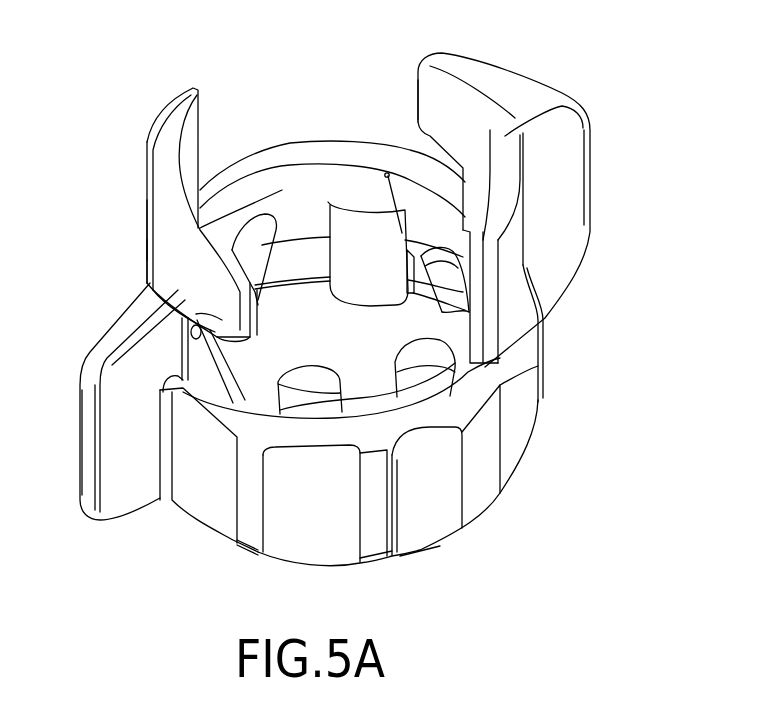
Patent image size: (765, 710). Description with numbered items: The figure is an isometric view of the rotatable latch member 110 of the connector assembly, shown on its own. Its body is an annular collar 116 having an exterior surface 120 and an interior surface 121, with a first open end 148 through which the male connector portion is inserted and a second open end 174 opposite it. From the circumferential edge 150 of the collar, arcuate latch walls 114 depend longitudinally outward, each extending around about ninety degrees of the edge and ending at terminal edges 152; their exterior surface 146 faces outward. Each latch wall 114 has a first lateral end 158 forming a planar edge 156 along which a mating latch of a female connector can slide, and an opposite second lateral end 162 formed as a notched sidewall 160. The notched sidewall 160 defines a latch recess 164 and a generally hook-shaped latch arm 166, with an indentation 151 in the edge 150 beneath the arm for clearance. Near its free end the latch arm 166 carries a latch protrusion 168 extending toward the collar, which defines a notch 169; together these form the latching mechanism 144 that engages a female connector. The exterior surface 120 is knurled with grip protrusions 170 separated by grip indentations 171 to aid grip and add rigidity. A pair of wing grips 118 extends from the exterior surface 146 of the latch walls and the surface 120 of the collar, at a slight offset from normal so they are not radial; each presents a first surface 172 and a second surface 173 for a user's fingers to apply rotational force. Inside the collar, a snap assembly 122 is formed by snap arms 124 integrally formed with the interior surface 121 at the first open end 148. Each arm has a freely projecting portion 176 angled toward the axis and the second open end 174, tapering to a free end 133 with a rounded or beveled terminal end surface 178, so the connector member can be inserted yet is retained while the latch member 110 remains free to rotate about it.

The rotatable latch member 110 is at (146, 91).
The arcuate latch walls 114 is at (148, 246).
The annular collar 116 is at (540, 404).
The wing grips 118 is at (592, 165).
The exterior surface of the annular collar 120 is at (536, 438).
The interior surface of the annular collar 121 is at (331, 173).
The snap assembly 122 is at (289, 200).
The snap arms 124 is at (252, 243).
The free ends of the snap arms 133 is at (350, 210).
The latching mechanism 144 is at (268, 335).
The exterior surface of the latch walls 146 is at (152, 217).
The first open end 148 is at (494, 521).
The circumferential edge 150 is at (446, 428).
The indentation 151 is at (253, 405).
The terminal edges of the latch walls 152 is at (154, 168).
The planar edge 156 is at (480, 316).
The first lateral end 158 is at (489, 331).
The notched sidewall 160 is at (188, 359).
The second lateral end 162 is at (238, 385).
The latch recess 164 is at (183, 382).
The latch arm 166 is at (426, 90).
The latch protrusion 168 is at (230, 355).
The notch 169 is at (192, 332).
The grip protrusions 170 is at (378, 555).
The grip indentations 171 is at (435, 537).
The first surface of the wing grip 172 is at (113, 394).
The second surface of the wing grip 173 is at (595, 236).
The second open end 174 is at (408, 203).
The freely projecting portion of the snap arms 176 is at (387, 174).
The terminal end surface 178 is at (386, 210).